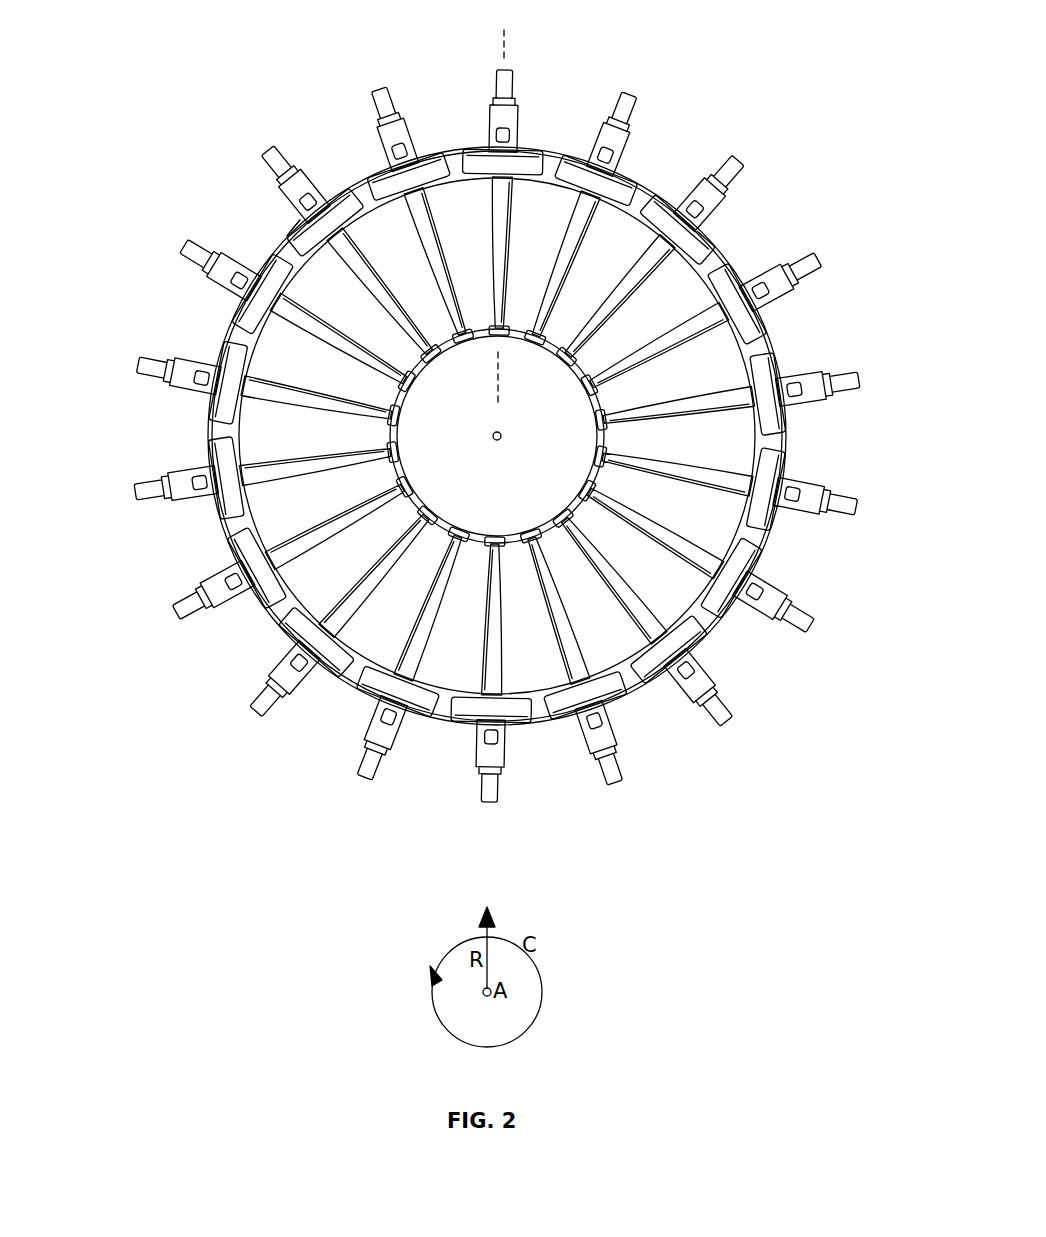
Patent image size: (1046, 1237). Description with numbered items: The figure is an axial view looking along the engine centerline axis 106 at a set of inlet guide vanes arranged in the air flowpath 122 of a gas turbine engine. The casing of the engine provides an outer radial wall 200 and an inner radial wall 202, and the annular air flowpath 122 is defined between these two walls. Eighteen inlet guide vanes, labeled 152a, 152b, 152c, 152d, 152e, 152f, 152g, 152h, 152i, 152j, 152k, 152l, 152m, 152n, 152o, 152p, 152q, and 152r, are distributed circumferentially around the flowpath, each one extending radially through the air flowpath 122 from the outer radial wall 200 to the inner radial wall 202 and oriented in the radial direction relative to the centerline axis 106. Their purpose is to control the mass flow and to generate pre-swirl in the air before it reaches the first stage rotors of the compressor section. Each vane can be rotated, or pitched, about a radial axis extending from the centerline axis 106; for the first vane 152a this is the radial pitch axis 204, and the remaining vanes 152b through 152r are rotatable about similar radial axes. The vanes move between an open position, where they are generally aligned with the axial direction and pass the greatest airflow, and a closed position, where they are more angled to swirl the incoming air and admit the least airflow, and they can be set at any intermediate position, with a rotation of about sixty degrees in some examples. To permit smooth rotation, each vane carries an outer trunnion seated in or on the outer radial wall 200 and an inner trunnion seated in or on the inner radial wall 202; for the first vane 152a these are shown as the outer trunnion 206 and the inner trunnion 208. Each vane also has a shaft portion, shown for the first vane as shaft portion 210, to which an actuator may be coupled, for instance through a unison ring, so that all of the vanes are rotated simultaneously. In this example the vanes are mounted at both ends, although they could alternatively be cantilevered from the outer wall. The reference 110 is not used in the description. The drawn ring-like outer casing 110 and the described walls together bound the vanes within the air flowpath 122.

The centerline axis 106 is at (498, 441).
The outer ring 110 is at (372, 180).
The air flowpath 122 is at (371, 313).
The first IGV 152a is at (512, 172).
The IGV 152b is at (625, 100).
The IGV 152c is at (745, 160).
The IGV 152d is at (822, 267).
The IGV 152e is at (866, 382).
The IGV 152f is at (868, 503).
The IGV 152g is at (826, 617).
The IGV 152h is at (716, 712).
The IGV 152i is at (614, 770).
The IGV 152j is at (484, 792).
The IGV 152k is at (368, 768).
The IGV 152l is at (264, 708).
The IGV 152m is at (182, 607).
The IGV 152n is at (140, 490).
The IGV 152o is at (138, 370).
The IGV 152p is at (197, 242).
The IGV 152q is at (272, 150).
The IGV 152r is at (384, 92).
The outer radial wall 200 is at (287, 236).
The inner radial wall 202 is at (430, 365).
The radial pitch axis 204 is at (508, 57).
The outer trunnion 206 is at (528, 152).
The inner trunnion 208 is at (506, 330).
The shaft portion 210 is at (513, 104).